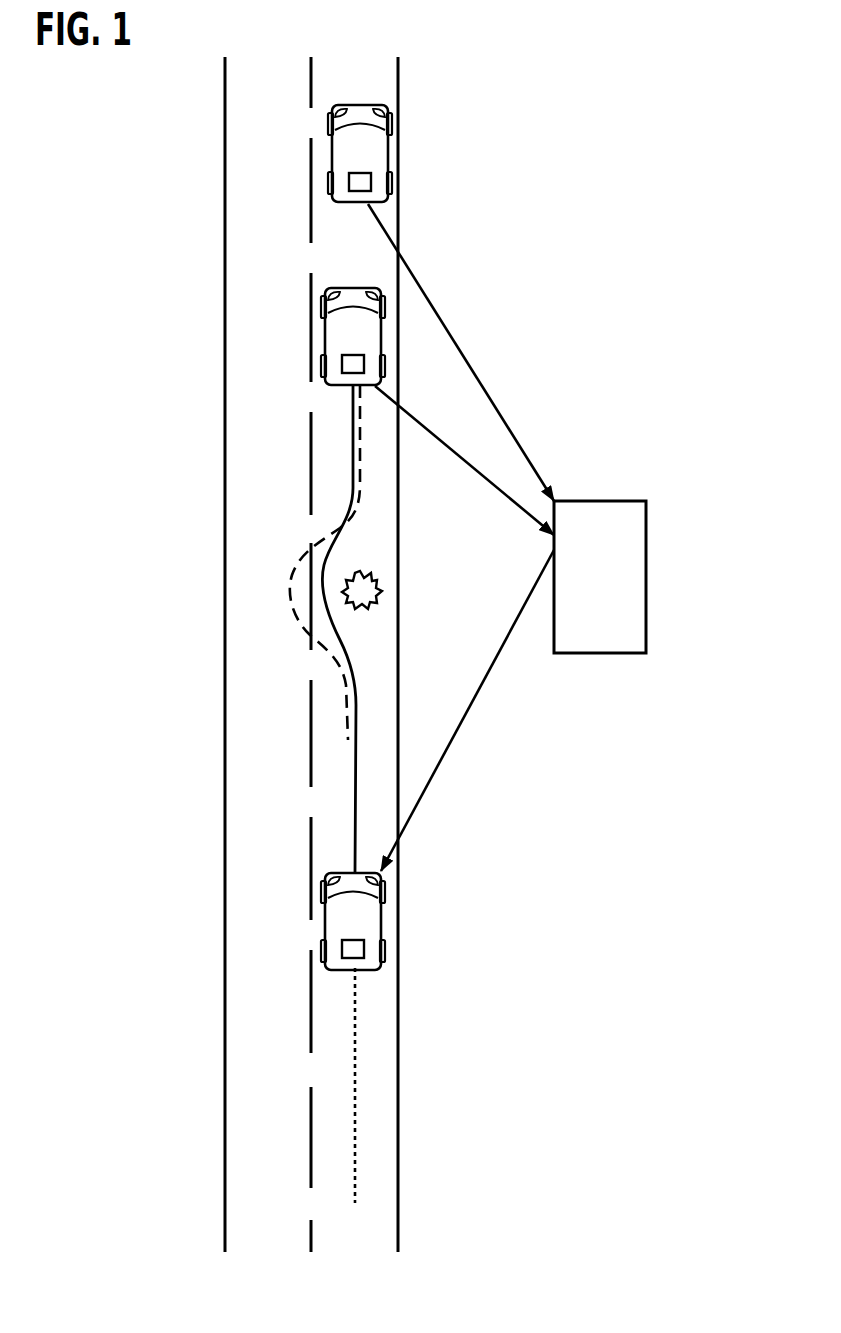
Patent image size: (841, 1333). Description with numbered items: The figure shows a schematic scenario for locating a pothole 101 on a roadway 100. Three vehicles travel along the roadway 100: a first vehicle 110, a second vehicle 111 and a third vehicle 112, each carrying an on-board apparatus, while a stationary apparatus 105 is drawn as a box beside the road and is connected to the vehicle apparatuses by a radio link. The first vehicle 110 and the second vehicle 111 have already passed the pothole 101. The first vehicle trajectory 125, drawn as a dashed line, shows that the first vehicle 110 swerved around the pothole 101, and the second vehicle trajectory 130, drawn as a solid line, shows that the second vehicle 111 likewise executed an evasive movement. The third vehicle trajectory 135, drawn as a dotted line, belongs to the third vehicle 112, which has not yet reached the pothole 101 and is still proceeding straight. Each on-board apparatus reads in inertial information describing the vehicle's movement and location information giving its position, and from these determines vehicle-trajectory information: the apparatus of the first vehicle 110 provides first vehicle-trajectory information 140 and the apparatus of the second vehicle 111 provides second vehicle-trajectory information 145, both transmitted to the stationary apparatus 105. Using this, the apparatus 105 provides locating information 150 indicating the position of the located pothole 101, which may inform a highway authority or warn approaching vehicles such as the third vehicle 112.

The roadway 100 is at (240, 180).
The pothole 101 is at (378, 589).
The apparatus 105 is at (635, 571).
The first vehicle 110 is at (378, 153).
The second vehicle 111 is at (338, 330).
The third vehicle 112 is at (338, 915).
The first vehicle trajectory 125 is at (293, 610).
The second vehicle trajectory 130 is at (328, 562).
The third vehicle trajectory 135 is at (357, 1073).
The first vehicle-trajectory information 140 is at (455, 342).
The second vehicle-trajectory information 145 is at (485, 487).
The locating information 150 is at (453, 740).